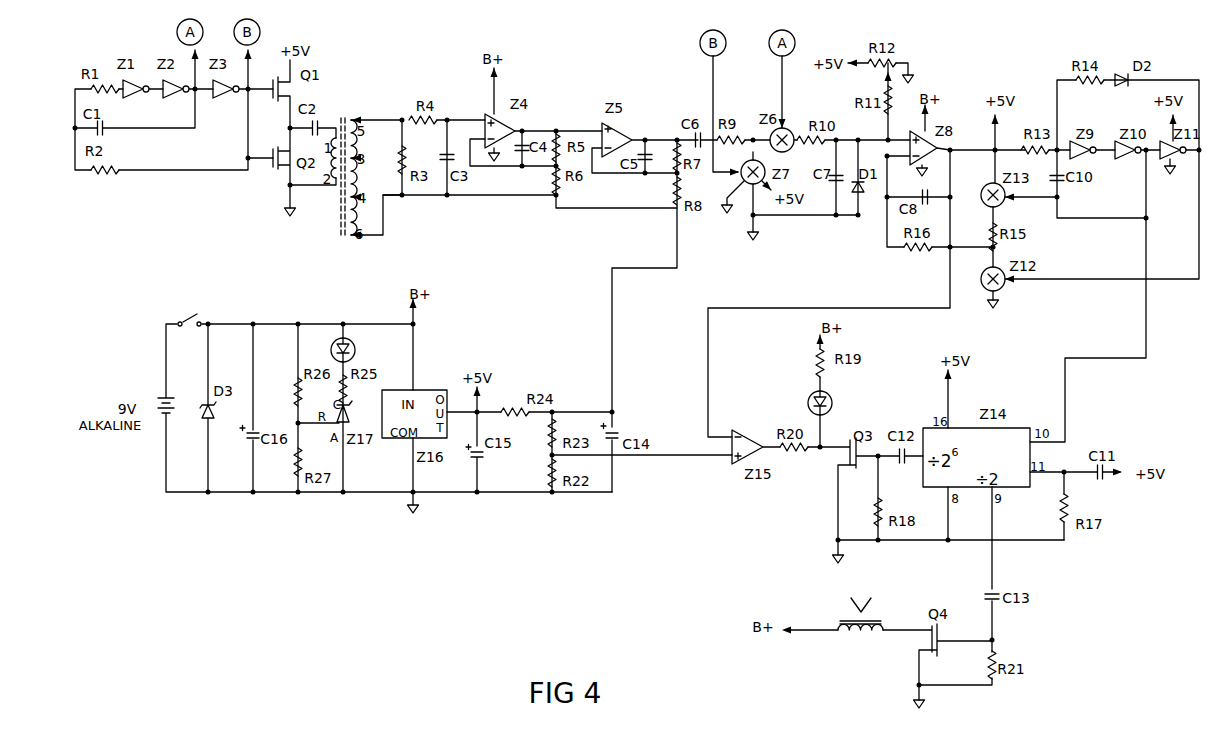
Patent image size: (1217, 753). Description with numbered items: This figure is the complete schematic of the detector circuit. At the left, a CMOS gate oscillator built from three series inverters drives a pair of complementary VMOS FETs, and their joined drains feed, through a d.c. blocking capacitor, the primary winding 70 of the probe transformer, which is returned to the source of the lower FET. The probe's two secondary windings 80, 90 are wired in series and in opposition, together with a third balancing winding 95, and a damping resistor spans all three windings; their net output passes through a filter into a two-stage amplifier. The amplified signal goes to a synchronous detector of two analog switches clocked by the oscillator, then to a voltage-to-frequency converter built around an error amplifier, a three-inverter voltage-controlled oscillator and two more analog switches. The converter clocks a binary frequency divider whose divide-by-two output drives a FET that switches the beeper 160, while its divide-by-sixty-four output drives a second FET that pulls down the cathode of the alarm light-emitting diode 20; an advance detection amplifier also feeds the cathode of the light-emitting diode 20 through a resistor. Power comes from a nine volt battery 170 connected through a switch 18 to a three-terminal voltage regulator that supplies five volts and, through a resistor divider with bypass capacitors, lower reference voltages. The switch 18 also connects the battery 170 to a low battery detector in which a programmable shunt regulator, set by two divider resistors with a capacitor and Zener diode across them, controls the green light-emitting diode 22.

The switch 18 is at (179, 309).
The alarm light-emitting diode 20 is at (814, 392).
The green light-emitting diode 22 is at (358, 344).
The primary winding 70 is at (339, 141).
The secondary winding 80 is at (359, 131).
The secondary winding 90 is at (360, 193).
The balancing winding 95 is at (359, 231).
The beeper 160 is at (841, 641).
The battery 170 is at (159, 398).